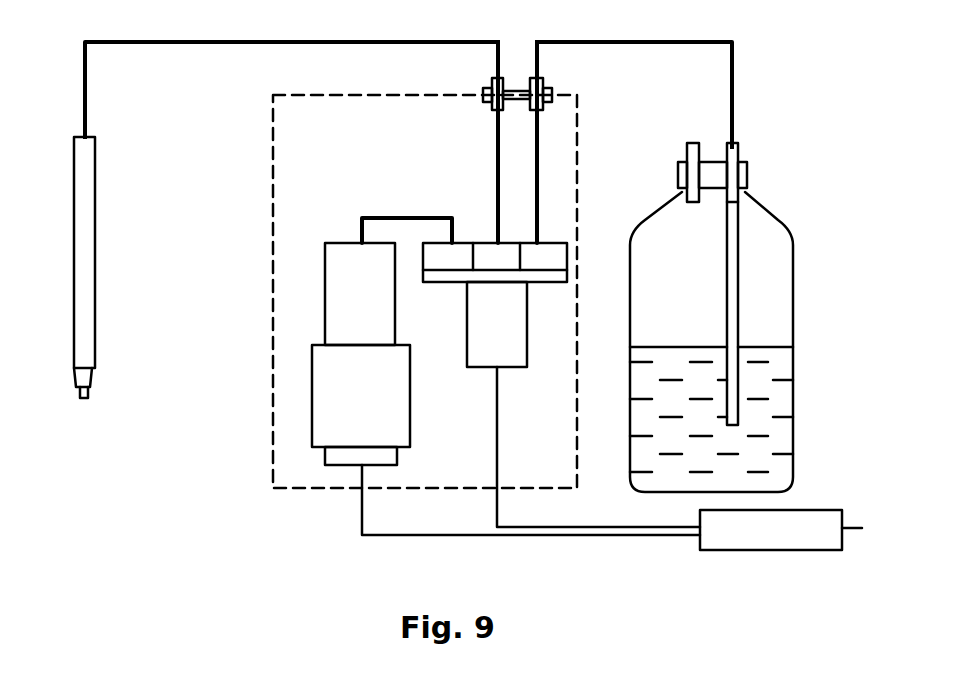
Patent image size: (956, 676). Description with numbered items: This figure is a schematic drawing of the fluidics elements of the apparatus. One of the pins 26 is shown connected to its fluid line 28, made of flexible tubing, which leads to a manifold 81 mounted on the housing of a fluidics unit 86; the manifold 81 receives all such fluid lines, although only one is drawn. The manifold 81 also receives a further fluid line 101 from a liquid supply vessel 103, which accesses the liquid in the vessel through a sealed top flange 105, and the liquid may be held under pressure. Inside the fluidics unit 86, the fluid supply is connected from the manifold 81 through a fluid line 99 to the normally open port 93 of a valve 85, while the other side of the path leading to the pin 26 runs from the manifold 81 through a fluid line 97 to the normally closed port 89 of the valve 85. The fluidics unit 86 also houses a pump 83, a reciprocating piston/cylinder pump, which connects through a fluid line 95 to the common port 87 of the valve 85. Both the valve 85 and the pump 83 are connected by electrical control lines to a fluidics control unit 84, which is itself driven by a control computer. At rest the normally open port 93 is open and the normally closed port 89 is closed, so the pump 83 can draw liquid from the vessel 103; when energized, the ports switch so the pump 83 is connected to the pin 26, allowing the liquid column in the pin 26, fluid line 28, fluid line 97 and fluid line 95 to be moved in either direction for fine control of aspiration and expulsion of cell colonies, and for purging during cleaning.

The fluid line 28 is at (85, 92).
The pin 26 is at (74, 304).
The fluidics unit 86 is at (273, 305).
The pump 83 is at (312, 407).
The fluid line 95 is at (378, 218).
The common port 87 is at (440, 243).
The normally closed port 89 is at (492, 243).
The normally open port 93 is at (560, 243).
The fluid line 97 is at (498, 153).
The fluid line 99 is at (537, 172).
The fluid line 101 is at (612, 44).
The manifold 81 is at (490, 106).
The valve 85 is at (492, 367).
The sealed top flange 105 is at (750, 177).
The liquid supply vessel 103 is at (793, 437).
The fluidics control unit 84 is at (778, 550).